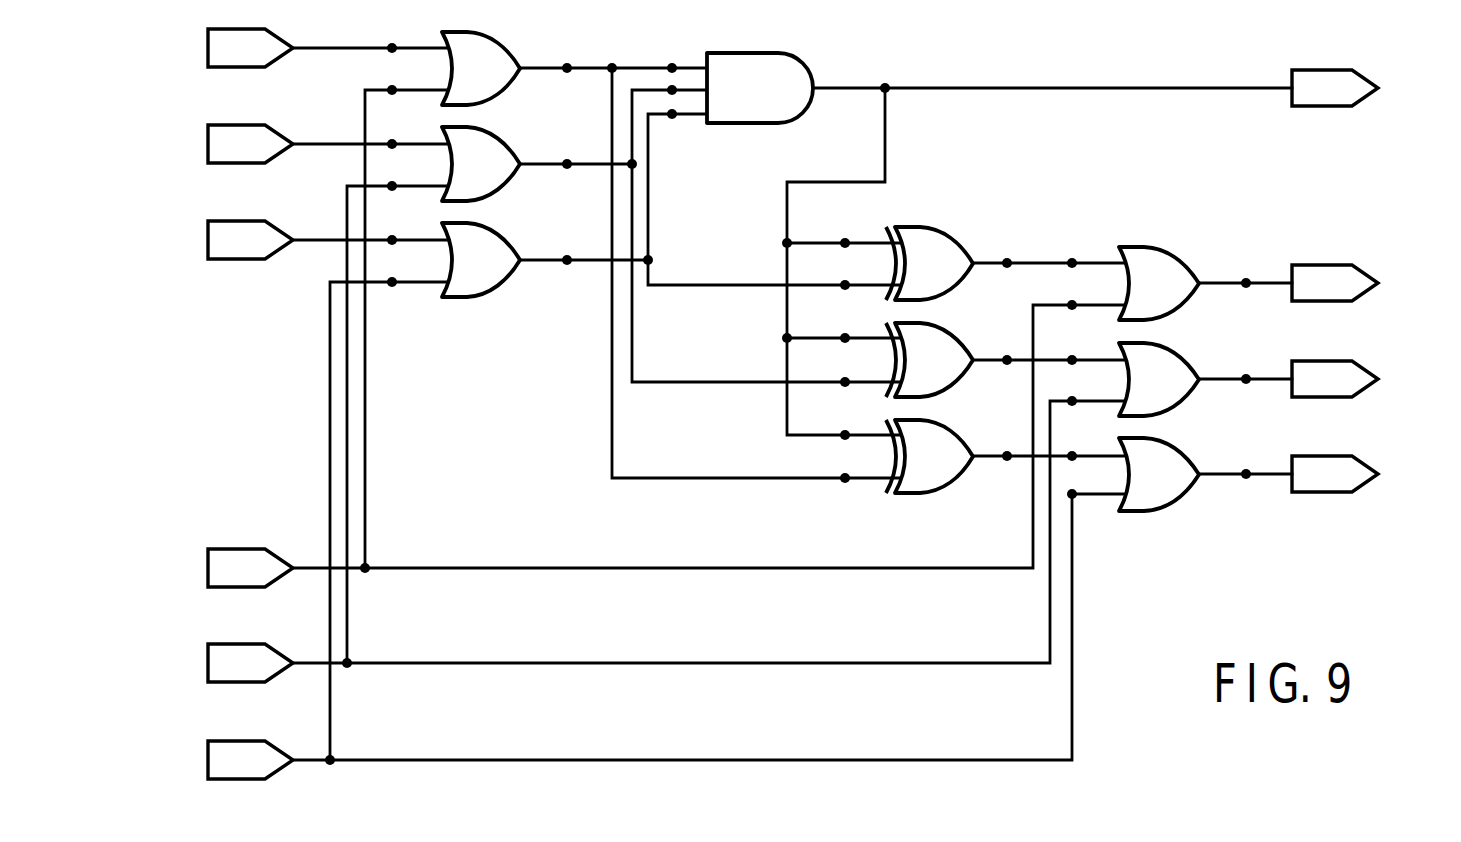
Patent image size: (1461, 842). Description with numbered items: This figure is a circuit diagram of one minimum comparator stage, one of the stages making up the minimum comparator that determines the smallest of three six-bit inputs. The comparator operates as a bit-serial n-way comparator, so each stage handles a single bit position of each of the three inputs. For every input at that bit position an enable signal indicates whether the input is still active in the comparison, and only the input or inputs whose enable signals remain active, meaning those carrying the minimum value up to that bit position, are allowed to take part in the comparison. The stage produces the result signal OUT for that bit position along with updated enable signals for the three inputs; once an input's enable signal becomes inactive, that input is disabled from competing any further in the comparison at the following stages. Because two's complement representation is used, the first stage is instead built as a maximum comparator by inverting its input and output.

The output pin OUT is at (1362, 88).